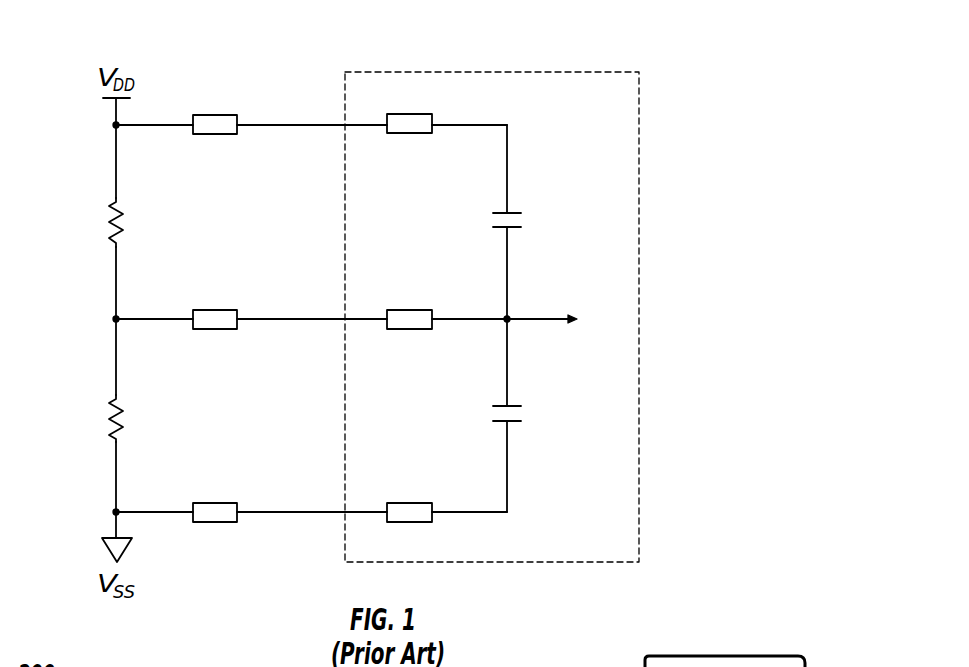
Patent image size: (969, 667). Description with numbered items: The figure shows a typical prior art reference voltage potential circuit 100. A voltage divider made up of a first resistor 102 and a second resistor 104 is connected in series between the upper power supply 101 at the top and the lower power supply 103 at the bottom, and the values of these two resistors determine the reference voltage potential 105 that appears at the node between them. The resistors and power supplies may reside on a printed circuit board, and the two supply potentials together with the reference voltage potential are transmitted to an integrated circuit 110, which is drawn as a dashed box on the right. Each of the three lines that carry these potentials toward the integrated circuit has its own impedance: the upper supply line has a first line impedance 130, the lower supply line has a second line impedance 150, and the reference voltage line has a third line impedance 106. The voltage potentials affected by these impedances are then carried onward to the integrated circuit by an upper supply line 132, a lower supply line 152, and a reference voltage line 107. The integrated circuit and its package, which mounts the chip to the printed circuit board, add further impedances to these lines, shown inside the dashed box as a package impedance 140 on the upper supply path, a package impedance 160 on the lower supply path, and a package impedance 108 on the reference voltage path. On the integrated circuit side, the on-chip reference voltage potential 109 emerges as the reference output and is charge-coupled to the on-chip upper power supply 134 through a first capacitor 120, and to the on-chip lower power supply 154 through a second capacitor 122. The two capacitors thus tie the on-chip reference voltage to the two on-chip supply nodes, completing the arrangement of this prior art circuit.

The reference voltage potential circuit 100 is at (648, 52).
The power supply V_DD 101 is at (116, 161).
The resistor R5 102 is at (109, 218).
The power supply V_SS 103 is at (116, 468).
The resistor R2 104 is at (109, 413).
The reference voltage potential 105 is at (145, 321).
The impedance Z3 106 is at (218, 310).
The line 107 is at (268, 319).
The impedance Z4 108 is at (415, 310).
The reference voltage potential on the integrated circuit 109 is at (533, 318).
The integrated circuit 110 is at (385, 72).
The capacitor C1 120 is at (515, 213).
The capacitor C2 122 is at (515, 406).
The impedance Z5 130 is at (218, 115).
The line 132 is at (300, 125).
The power supply on the integrated circuit 134 is at (515, 125).
The impedance Z6 140 is at (415, 114).
The impedance Z7 150 is at (218, 503).
The line 152 is at (268, 512).
The power supply on the integrated circuit 154 is at (515, 512).
The impedance Z8 160 is at (415, 503).